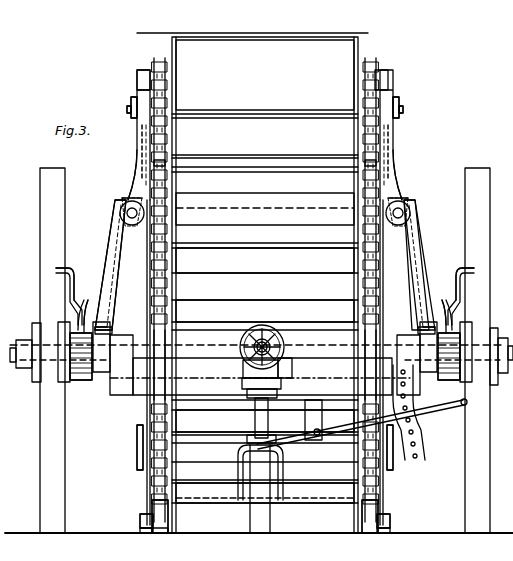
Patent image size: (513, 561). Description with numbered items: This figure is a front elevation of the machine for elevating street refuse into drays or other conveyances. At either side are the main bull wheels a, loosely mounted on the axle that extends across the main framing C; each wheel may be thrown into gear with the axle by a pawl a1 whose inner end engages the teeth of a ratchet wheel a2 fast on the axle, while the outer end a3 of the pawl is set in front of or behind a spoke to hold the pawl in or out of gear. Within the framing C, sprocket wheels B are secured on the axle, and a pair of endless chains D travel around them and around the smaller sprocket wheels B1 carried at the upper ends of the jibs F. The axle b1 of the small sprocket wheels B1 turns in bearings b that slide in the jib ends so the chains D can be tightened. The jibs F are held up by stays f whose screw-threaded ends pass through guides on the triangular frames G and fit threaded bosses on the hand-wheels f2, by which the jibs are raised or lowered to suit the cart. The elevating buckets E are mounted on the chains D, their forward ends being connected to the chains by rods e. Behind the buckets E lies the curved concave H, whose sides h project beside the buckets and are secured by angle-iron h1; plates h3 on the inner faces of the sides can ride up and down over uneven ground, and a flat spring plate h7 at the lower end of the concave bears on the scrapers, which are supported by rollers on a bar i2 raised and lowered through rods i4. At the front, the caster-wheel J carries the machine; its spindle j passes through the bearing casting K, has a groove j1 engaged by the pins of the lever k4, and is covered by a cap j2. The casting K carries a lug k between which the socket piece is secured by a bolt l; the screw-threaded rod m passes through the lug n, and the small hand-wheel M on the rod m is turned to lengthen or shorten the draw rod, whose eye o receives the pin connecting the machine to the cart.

The main bull wheel a is at (265, 342).
The pawl a1 is at (92, 296).
The ratchet wheel a2 is at (82, 380).
The outer end of pawl a3 is at (80, 258).
The bearing b is at (131, 110).
The axle of small sprocket wheels b1 is at (127, 108).
The sprocket wheel B is at (150, 477).
The small sprocket wheel B1 is at (377, 63).
The main framing C is at (262, 376).
The endless chain D is at (158, 133).
The rod or bar e is at (157, 163).
The elevating bucket E is at (252, 283).
The jib F is at (133, 186).
The stay f is at (124, 200).
The hand-wheel f2 is at (120, 240).
The triangular frame G is at (113, 213).
The concave H is at (201, 183).
The bolt l is at (339, 210).
The hand-wheel M is at (246, 336).
The screw threaded rod m is at (270, 347).
The lug n is at (260, 369).
The casting K is at (285, 368).
The eye o is at (261, 386).
The lug k is at (228, 398).
The lever k4 is at (296, 438).
The spindle j is at (256, 428).
The channel or groove j1 is at (248, 447).
The cap j2 is at (283, 332).
The caster-wheel J is at (275, 520).
The side of concave h is at (162, 505).
The angle-iron h1 is at (142, 518).
The plate h3 is at (148, 530).
The flat spring plate h7 is at (160, 533).
The bar i2 is at (415, 439).
The rod i4 is at (139, 426).